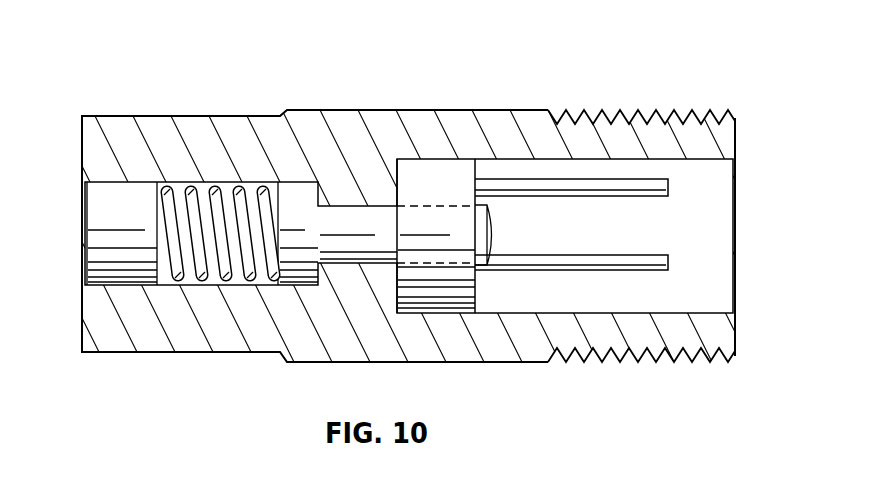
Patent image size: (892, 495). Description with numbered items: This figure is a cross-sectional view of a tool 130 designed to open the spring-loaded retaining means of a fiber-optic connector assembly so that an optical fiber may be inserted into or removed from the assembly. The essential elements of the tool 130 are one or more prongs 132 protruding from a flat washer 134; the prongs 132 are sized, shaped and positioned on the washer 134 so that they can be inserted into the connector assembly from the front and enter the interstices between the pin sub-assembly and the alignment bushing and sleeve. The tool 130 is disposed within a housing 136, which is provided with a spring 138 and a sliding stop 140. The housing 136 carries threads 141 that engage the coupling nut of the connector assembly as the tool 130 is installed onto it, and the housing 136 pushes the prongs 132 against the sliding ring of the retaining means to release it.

The tool 130 is at (258, 78).
The prongs 132 is at (595, 183).
The flat washer 134 is at (457, 181).
The housing 136 is at (305, 122).
The spring 138 is at (166, 182).
The sliding stop 140 is at (367, 220).
The threads 141 is at (693, 121).